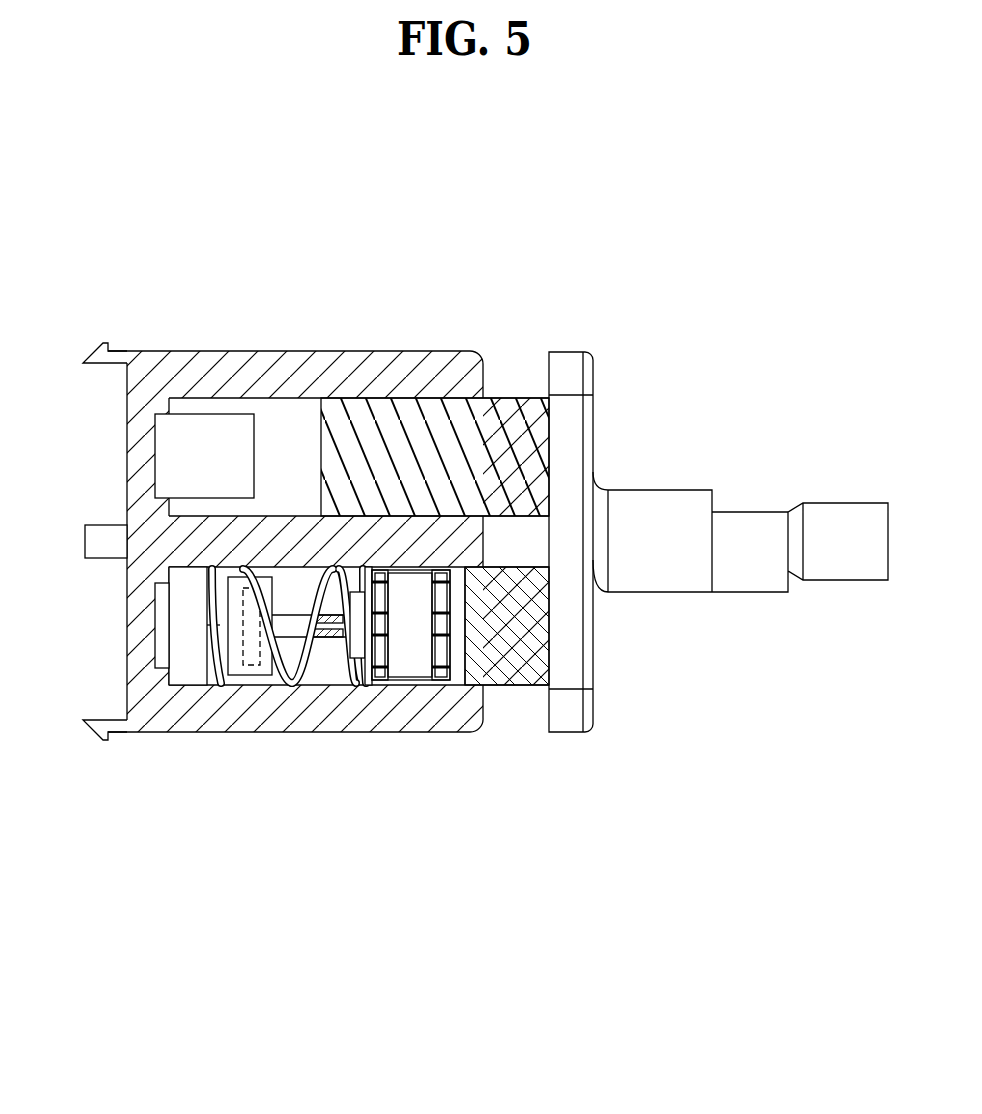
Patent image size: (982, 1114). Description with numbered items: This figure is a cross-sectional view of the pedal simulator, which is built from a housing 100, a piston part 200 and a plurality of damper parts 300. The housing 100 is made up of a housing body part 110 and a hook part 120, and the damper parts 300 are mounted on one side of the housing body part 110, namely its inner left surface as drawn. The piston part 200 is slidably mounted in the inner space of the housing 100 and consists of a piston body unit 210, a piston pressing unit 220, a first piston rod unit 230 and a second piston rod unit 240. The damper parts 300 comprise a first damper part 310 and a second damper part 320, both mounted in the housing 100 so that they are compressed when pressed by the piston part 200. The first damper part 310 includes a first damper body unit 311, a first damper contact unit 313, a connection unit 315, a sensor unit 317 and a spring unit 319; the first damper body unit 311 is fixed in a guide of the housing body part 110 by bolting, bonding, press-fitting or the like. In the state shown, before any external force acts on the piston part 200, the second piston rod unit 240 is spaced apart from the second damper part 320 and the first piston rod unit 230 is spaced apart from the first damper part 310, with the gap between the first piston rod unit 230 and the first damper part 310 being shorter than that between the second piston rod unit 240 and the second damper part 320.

The housing 100 is at (291, 459).
The housing body part 110 is at (357, 363).
The hook part 120 is at (95, 345).
The piston part 200 is at (676, 536).
The piston body unit 210 is at (577, 420).
The piston pressing unit 220 is at (773, 522).
The first piston rod unit 230 is at (520, 640).
The second piston rod unit 240 is at (495, 422).
The damper part 300 is at (297, 754).
The first damper part 310 is at (297, 734).
The first damper body unit 311 is at (188, 665).
The first damper contact unit 313 is at (392, 670).
The connection unit 315 is at (283, 683).
The sensor unit 317 is at (410, 663).
The spring unit 319 is at (363, 683).
The second damper part 320 is at (177, 448).